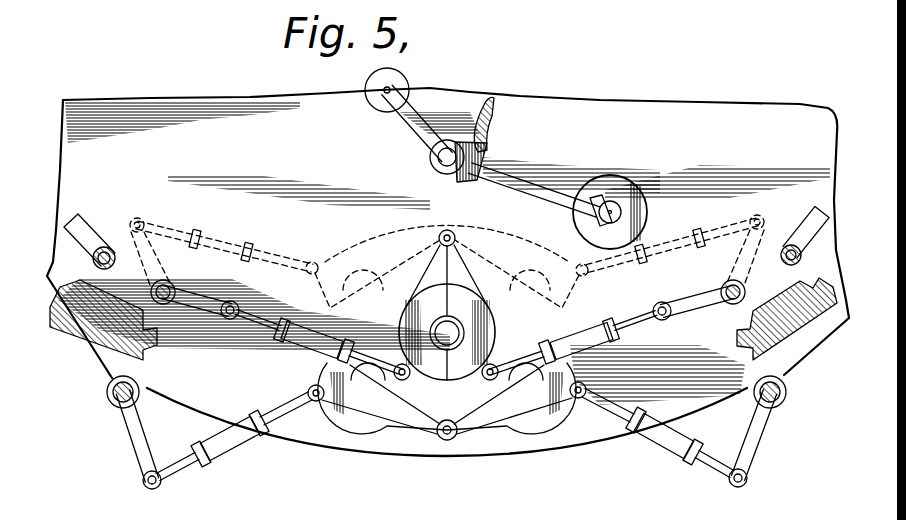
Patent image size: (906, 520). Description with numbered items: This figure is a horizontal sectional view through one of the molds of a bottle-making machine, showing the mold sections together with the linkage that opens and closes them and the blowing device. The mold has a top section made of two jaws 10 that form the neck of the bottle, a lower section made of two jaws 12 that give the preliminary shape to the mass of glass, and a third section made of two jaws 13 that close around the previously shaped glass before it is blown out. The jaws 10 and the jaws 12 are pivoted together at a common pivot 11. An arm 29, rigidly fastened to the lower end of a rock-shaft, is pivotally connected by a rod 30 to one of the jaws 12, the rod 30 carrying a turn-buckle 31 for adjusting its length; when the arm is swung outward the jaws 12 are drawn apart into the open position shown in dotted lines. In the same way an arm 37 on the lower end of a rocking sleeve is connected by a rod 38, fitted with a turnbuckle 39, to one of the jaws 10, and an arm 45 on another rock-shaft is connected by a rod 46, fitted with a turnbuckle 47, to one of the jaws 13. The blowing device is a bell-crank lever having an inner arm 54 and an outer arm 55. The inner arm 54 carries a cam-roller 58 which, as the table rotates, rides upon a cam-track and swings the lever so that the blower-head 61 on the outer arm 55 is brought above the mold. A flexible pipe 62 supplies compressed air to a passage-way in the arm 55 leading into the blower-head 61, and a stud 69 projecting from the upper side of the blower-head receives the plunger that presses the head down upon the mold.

The jaws of the top section of the mold 10 is at (420, 300).
The pivot 11 is at (455, 243).
The jaws of the lower section of the mold 12 is at (355, 250).
The jaws of the third section of the mold 13 is at (332, 418).
The arm 29 is at (133, 240).
The rod 30 is at (155, 222).
The turn-buckle 31 is at (222, 240).
The arm 37 is at (200, 293).
The rod 38 is at (252, 315).
The turnbuckle 39 is at (298, 345).
The arm 45 is at (137, 442).
The rod 46 is at (182, 468).
The turnbuckle 47 is at (240, 445).
The inner arm 54 is at (430, 110).
The outer arm 55 is at (527, 175).
The cam-roller 58 is at (380, 100).
The blower-head 61 is at (610, 212).
The flexible pipe 62 is at (490, 125).
The stud 69 is at (613, 216).